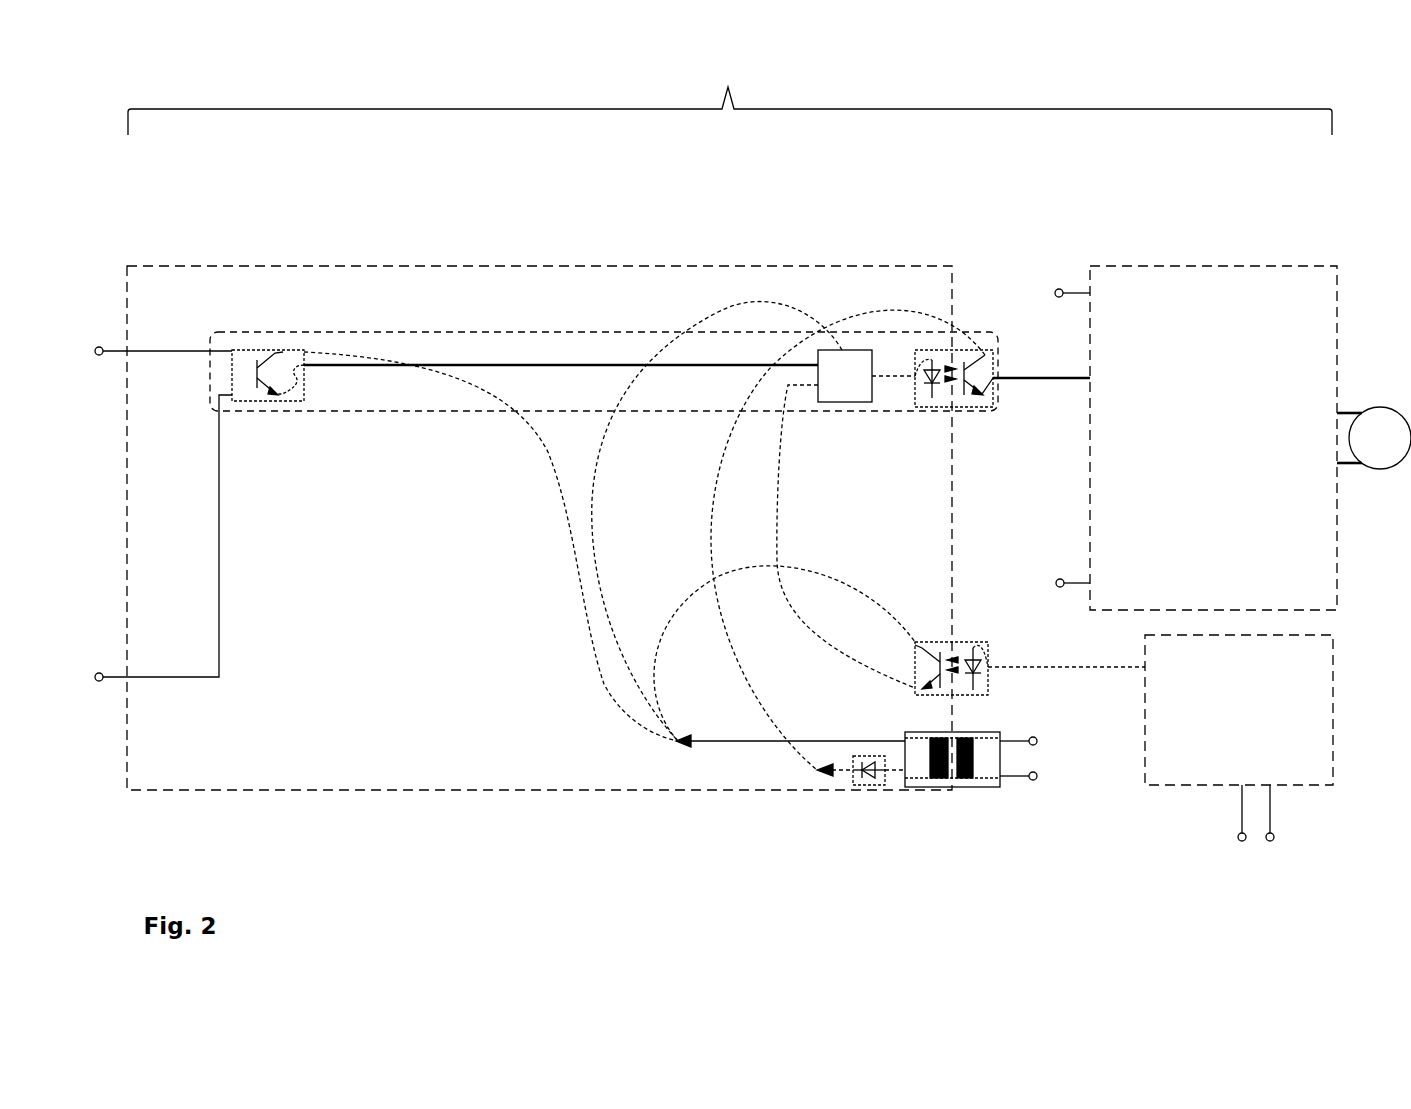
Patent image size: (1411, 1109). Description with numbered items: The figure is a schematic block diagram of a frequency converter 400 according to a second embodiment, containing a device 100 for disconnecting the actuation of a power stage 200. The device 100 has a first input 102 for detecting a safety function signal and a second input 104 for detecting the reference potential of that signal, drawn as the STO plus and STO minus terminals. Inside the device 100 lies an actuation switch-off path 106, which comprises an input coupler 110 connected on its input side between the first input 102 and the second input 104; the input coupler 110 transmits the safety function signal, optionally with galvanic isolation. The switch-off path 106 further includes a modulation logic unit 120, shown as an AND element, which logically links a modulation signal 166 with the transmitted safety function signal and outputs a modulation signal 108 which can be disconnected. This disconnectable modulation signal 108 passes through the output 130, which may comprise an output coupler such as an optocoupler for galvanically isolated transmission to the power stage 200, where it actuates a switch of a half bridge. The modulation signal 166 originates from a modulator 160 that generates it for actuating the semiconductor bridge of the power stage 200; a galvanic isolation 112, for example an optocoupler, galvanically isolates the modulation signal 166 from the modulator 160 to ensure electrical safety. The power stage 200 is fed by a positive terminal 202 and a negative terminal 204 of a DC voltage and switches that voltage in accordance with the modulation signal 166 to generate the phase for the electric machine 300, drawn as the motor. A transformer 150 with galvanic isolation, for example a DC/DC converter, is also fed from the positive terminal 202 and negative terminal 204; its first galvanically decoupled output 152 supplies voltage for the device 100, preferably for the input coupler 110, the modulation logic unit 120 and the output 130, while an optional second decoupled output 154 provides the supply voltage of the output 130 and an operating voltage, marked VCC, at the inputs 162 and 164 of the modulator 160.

The device for disconnecting the actuation of a power stage 100 is at (372, 266).
The first input 102 is at (99, 346).
The second input 104 is at (99, 682).
The actuation switch-off path 106 is at (530, 332).
The modulation signal which can be disconnected 108 is at (1018, 378).
The input coupler 110 is at (305, 381).
The galvanic isolation 112 is at (960, 641).
The modulation logic unit 120 is at (858, 402).
The output 130 is at (970, 408).
The transformer 150 is at (972, 787).
The first galvanically decoupled output 152 is at (707, 741).
The second decoupled output 154 is at (842, 773).
The modulator 160 is at (1183, 787).
The modulator input 162 is at (1240, 810).
The modulator input 164 is at (1272, 810).
The modulation signal 166 is at (802, 392).
The power stage 200 is at (1178, 266).
The positive terminal 202 is at (1063, 257).
The negative terminal 204 is at (1053, 581).
The electric machine 300 is at (1375, 409).
The frequency converter 400 is at (730, 98).